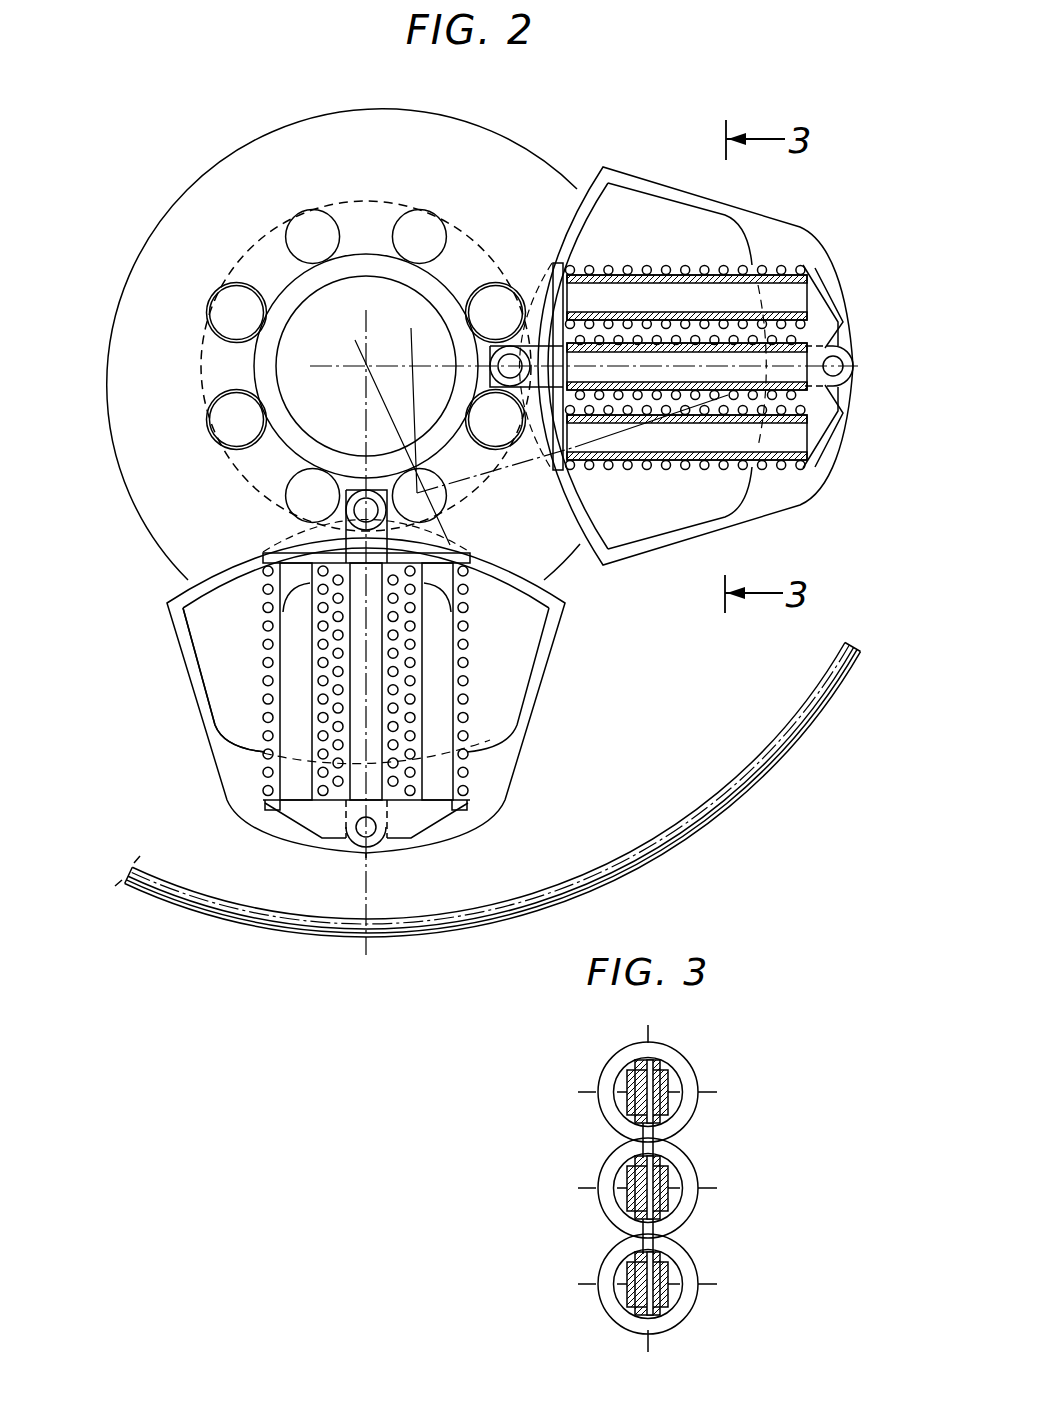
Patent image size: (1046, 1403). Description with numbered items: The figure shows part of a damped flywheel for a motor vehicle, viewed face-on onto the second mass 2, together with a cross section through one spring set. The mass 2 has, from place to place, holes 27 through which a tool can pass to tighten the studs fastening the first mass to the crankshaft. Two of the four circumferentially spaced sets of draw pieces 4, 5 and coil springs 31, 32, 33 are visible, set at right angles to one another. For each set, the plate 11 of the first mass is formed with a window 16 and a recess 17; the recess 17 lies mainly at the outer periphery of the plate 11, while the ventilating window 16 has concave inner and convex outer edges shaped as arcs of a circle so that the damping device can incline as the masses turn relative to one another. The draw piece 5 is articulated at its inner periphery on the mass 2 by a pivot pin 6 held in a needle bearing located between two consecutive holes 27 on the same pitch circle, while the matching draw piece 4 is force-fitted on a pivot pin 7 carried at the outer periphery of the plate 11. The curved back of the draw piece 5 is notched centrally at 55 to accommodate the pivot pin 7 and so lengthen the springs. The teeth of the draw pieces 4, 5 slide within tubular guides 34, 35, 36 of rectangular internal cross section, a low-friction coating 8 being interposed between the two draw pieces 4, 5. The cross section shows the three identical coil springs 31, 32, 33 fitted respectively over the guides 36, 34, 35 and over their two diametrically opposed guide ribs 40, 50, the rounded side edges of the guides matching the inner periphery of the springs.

In FIG. 2, the second mass 2 is at (214, 154).
In FIG. 2, the holes 27 is at (294, 222).
In FIG. 2, the pivot pin 6 is at (352, 512).
In FIG. 2, the windows 16 is at (214, 683).
In FIG. 2, the recesses 17 is at (230, 781).
In FIG. 2, the draw piece 5 is at (301, 814).
In FIG. 3, the draw piece 5 is at (643, 1065).
In FIG. 2, the pivot pin 7 is at (358, 838).
In FIG. 2, the draw piece 4 is at (358, 866).
In FIG. 3, the draw piece 4 is at (654, 1065).
In FIG. 2, the central notch 55 is at (388, 845).
In FIG. 2, the plate 11 is at (440, 898).
In FIG. 2, the tubular guide 36 is at (587, 308).
In FIG. 3, the tubular guide 36 is at (628, 1070).
In FIG. 2, the resilient member 31 is at (703, 275).
In FIG. 3, the resilient member 31 is at (680, 1065).
In FIG. 2, the resilient member 32 is at (760, 345).
In FIG. 3, the resilient member 32 is at (685, 1170).
In FIG. 2, the tubular guide 34 is at (672, 410).
In FIG. 3, the tubular guide 34 is at (625, 1178).
In FIG. 2, the resilient member 33 is at (722, 460).
In FIG. 3, the resilient member 33 is at (685, 1262).
In FIG. 2, the tubular guide 35 is at (768, 466).
In FIG. 3, the tubular guide 35 is at (625, 1270).
In FIG. 3, the coating 8 is at (620, 1085).
In FIG. 3, the guide rib 40 is at (625, 1292).
In FIG. 3, the guide rib 50 is at (685, 1292).